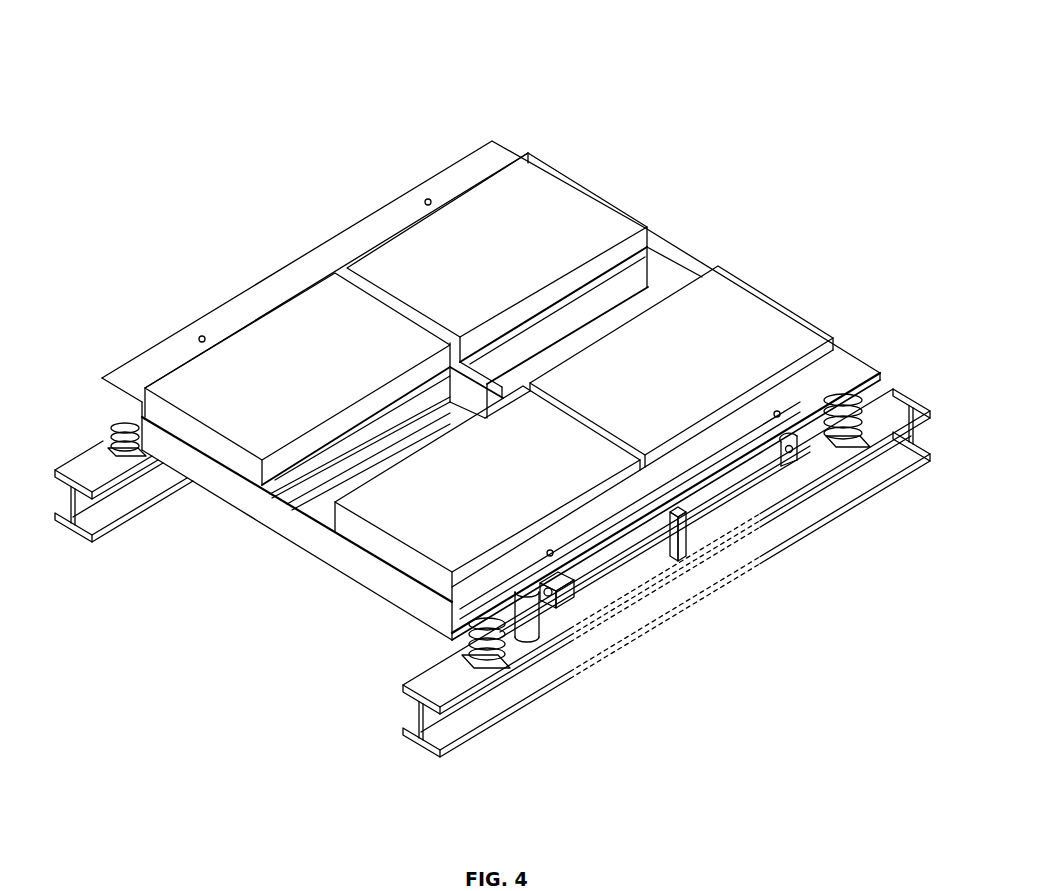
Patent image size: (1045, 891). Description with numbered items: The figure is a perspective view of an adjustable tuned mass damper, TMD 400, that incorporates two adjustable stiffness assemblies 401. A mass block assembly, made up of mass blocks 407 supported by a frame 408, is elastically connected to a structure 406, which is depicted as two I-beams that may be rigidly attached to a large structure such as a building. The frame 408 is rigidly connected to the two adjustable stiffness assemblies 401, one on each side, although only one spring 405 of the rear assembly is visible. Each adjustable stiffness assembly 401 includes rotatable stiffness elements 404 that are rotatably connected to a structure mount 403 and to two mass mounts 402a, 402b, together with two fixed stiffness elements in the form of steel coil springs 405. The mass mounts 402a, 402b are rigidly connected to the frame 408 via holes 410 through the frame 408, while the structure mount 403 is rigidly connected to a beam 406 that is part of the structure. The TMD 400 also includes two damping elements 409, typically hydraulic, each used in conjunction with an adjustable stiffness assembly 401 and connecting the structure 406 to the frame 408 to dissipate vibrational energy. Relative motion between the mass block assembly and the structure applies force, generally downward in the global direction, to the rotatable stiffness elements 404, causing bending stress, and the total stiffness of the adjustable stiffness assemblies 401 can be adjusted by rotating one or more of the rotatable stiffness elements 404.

The TMD 400 is at (279, 137).
The adjustable stiffness assembly 401 is at (655, 570).
The mass mount 402a is at (567, 592).
The mass mount 402b is at (790, 447).
The structure mount 403 is at (685, 537).
The rotatable stiffness elements 404 is at (738, 480).
The steel coil springs 405 is at (122, 425).
The structure 406 is at (423, 717).
The mass blocks 407 is at (587, 217).
The frame 408 is at (465, 612).
The damping elements 409 is at (530, 613).
The holes 410 is at (780, 412).